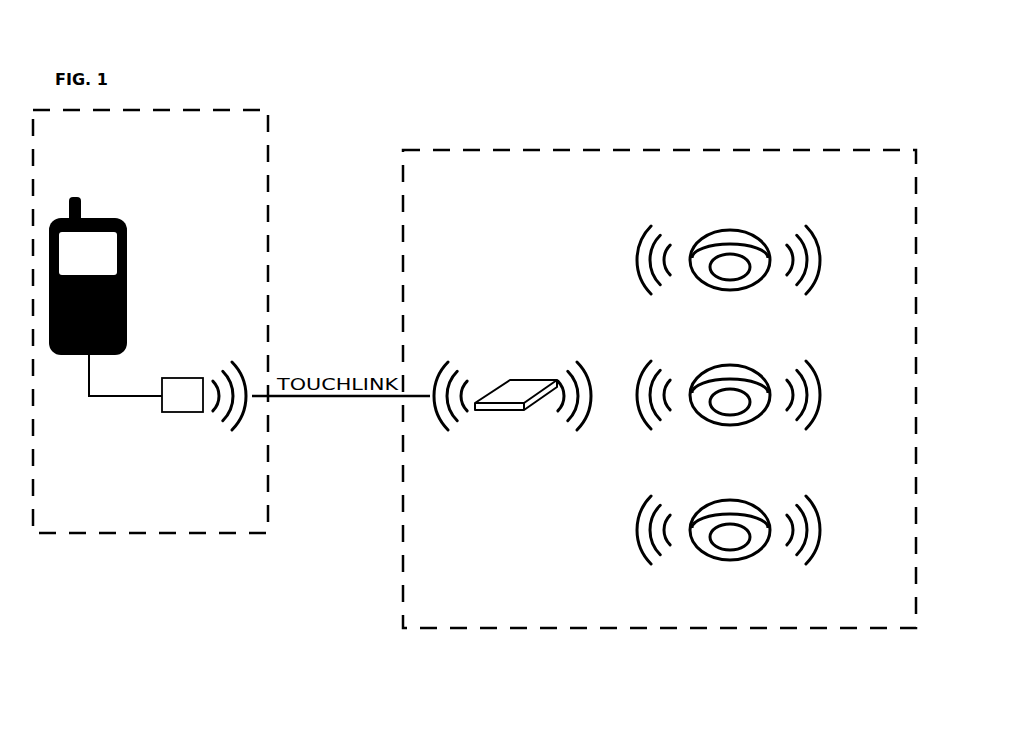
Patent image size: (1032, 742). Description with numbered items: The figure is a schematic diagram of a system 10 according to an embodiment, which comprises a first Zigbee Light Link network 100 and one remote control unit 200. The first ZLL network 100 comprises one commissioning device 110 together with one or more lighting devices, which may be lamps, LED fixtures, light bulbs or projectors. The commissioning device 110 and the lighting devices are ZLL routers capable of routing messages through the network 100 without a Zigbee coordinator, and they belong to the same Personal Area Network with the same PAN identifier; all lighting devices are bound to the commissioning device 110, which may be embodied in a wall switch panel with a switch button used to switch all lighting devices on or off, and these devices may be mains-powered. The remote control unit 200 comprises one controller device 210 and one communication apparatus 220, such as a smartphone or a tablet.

The system 10 is at (184, 618).
The first Zigbee Light Link (ZLL) network 100 is at (658, 628).
The commissioning device 110 is at (517, 412).
The remote control unit 200 is at (150, 110).
The controller device 210 is at (183, 412).
The communication apparatus 220 is at (137, 278).